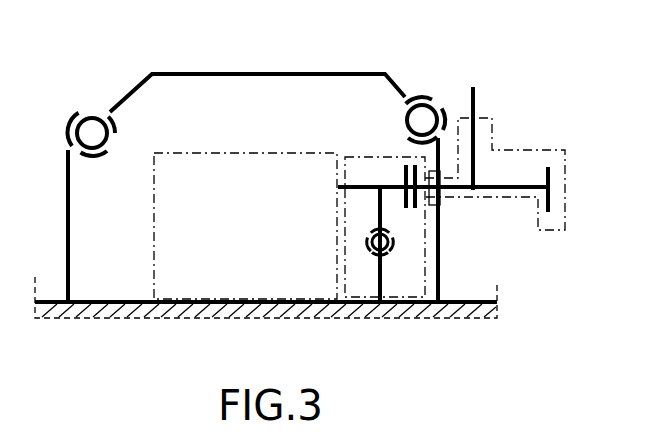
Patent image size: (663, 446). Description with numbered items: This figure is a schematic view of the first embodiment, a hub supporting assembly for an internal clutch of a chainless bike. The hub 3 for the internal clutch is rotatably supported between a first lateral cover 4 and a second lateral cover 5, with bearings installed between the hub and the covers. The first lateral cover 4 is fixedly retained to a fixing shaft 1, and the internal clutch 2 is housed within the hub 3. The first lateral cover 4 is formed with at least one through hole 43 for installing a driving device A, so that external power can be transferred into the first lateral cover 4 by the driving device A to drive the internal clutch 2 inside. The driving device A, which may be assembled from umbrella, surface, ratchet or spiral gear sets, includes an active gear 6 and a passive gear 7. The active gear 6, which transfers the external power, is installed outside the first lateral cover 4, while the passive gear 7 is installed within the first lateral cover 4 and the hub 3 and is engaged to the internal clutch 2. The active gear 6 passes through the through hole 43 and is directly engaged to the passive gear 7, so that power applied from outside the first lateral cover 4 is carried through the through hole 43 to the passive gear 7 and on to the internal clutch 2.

The fixing shaft 1 is at (467, 298).
The internal clutch 2 is at (202, 151).
The hub 3 is at (233, 73).
The first lateral cover 4 is at (442, 248).
The second lateral cover 5 is at (68, 203).
The active gear 6 is at (552, 178).
The passive gear 7 is at (393, 186).
The through hole 43 is at (443, 172).
The driving device A is at (508, 140).